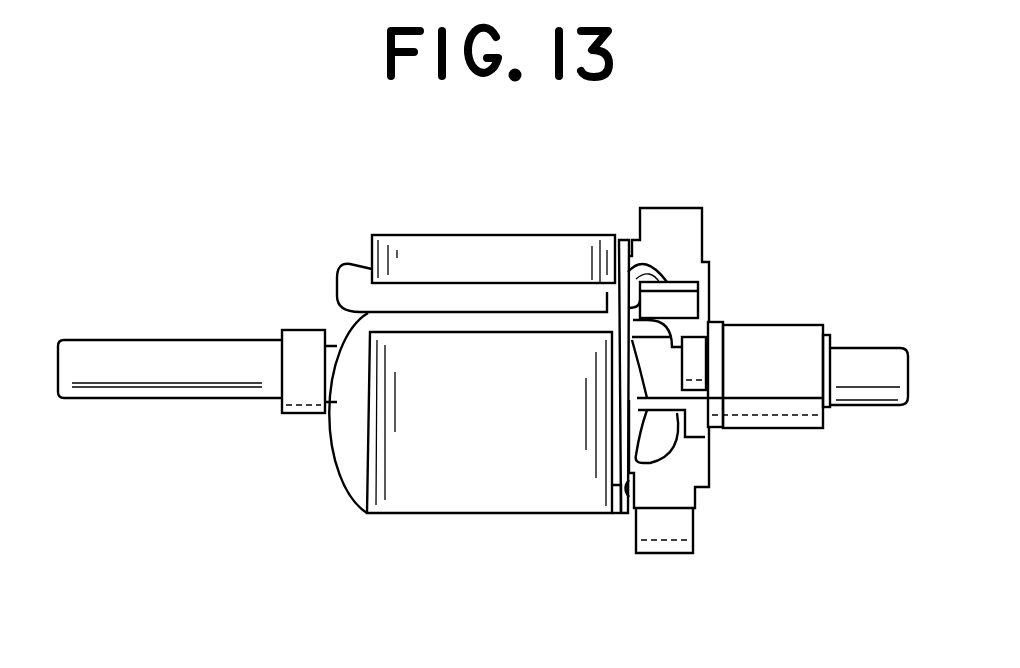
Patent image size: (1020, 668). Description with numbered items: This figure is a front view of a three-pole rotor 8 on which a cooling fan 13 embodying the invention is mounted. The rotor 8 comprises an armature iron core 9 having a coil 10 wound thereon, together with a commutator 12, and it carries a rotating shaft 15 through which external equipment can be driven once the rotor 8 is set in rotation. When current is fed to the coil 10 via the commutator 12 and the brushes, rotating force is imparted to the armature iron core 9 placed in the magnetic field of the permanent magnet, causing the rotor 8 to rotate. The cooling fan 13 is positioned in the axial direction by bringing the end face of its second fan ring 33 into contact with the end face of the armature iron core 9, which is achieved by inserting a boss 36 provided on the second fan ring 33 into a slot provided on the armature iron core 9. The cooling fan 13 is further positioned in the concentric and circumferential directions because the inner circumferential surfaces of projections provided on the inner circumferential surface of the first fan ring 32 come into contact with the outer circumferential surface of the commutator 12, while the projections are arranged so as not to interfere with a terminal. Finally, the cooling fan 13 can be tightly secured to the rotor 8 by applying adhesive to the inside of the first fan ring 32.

The rotor 8 is at (386, 216).
The armature iron core 9 is at (460, 258).
The coil 10 is at (533, 297).
The boss 36 is at (585, 287).
The cooling fan 13 is at (682, 232).
The first fan ring 32 is at (692, 350).
The commutator 12 is at (768, 323).
The rotating shaft 15 is at (177, 375).
The second fan ring 33 is at (605, 488).